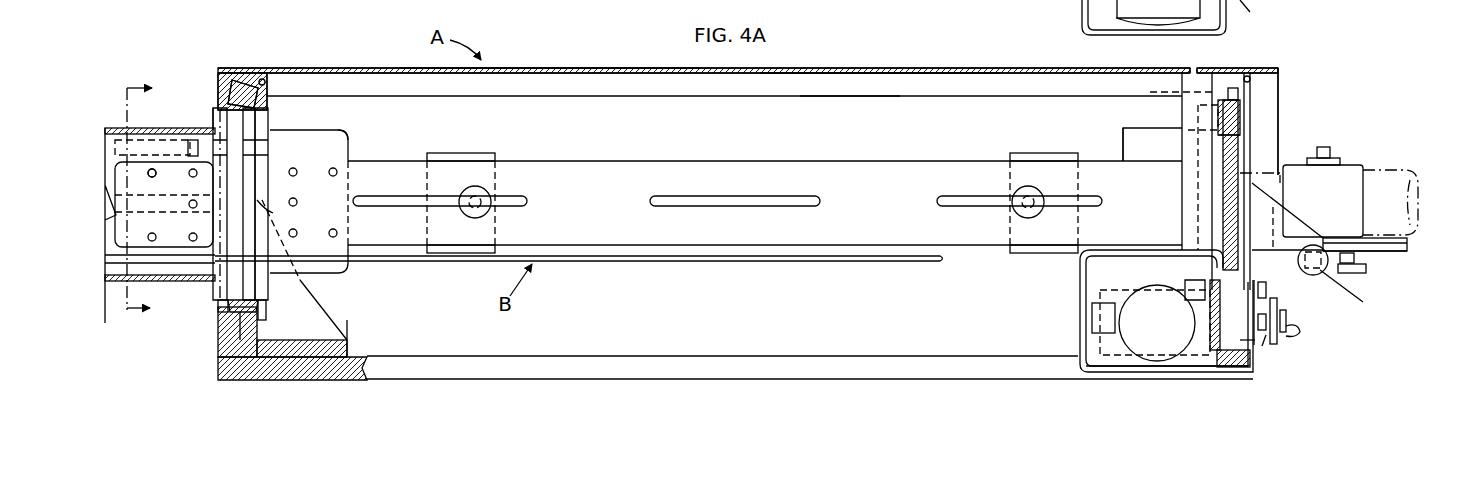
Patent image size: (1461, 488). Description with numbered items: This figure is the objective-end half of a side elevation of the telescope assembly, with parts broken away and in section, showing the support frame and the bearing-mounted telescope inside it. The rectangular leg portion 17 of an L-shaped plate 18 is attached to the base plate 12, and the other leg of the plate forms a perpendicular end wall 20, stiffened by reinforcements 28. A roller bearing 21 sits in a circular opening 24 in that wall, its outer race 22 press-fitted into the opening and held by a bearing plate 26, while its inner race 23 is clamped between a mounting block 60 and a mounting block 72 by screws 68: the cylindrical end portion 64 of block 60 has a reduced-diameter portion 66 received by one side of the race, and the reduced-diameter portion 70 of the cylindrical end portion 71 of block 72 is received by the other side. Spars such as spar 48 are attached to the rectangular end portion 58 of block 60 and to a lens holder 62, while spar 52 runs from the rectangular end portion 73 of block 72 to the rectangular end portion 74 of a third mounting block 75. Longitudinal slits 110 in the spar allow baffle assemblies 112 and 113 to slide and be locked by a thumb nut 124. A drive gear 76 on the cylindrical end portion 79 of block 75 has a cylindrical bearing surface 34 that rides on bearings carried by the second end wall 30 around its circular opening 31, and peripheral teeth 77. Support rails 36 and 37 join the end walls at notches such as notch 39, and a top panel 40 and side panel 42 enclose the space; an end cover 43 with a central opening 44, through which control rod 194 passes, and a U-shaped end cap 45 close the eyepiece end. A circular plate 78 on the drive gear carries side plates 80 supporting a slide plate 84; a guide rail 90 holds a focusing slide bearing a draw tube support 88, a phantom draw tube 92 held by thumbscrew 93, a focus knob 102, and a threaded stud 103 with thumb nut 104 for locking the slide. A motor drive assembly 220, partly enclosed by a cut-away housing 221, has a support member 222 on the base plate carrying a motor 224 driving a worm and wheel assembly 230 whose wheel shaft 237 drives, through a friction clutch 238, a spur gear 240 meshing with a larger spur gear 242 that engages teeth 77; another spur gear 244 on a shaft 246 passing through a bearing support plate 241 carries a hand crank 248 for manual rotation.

The base plate 12 is at (742, 359).
The rectangular leg portion 17 is at (340, 343).
The L-shaped plate 18 is at (216, 362).
The end wall 20 is at (245, 75).
The roller bearing 21 is at (222, 311).
The outer race 22 is at (222, 326).
The inner race 23 is at (260, 303).
The circular opening 24 is at (252, 365).
The bearing plate 26 is at (270, 86).
The reinforcements 28 is at (325, 303).
The end wall 30 is at (1200, 108).
The circular opening 31 is at (1168, 80).
The cylindrical bearing surface 34 is at (1220, 150).
The support rail 36 is at (586, 80).
The support rail 37 is at (345, 72).
The notch 39 is at (1203, 97).
The top panel 40 is at (828, 74).
The side panel 42 is at (846, 138).
The end cover 43 is at (1255, 108).
The central opening 44 is at (1250, 124).
The end cap 45 is at (1262, 72).
The spar 48 is at (187, 235).
The spar 52 is at (570, 221).
The rectangular end portion 58 is at (148, 270).
The mounting block 60 is at (206, 111).
The lens holder 62 is at (191, 204).
The cylindrical end portion 64 is at (218, 107).
The reduced-diameter portion 66 is at (236, 95).
The screws 68 is at (196, 128).
The reduced-diameter portion 70 is at (249, 126).
The cylindrical end portion 71 is at (263, 112).
The mounting block 72 is at (332, 130).
The rectangular end portion 73 is at (350, 149).
The rectangular end portion 74 is at (1124, 145).
The mounting block 75 is at (1122, 130).
The drive gear 76 is at (1213, 176).
The peripheral teeth 77 is at (1251, 105).
The circular plate 78 is at (1249, 157).
The cylindrical end portion 79 is at (1220, 110).
The side plate 80 is at (1302, 245).
The slide plate 84 is at (1396, 252).
The draw tube support 88 is at (1335, 208).
The guide rail 90 is at (1408, 244).
The draw tube 92 is at (1395, 172).
The thumbscrew 93 is at (1341, 152).
The knob 102 is at (1328, 268).
The threaded stud 103 is at (1366, 269).
The thumb nut 104 is at (1342, 253).
The longitudinal slit 110 is at (505, 200).
The baffle assembly 112 is at (1053, 150).
The baffle assembly 113 is at (478, 150).
The thumb nut 124 is at (1030, 218).
The control rod 194 is at (692, 262).
The motor drive assembly 220 is at (1315, 364).
The housing 221 is at (1082, 18).
The support member 222 is at (1236, 362).
The motor 224 is at (1150, 352).
The worm and wheel assembly 230 is at (1081, 266).
The wheel shaft 237 is at (1176, 380).
The friction clutch 238 is at (1243, 5).
The spur gear 240 is at (1252, 277).
The bearing support plate 241 is at (1270, 340).
The spur gear 242 is at (1290, 318).
The spur gear 244 is at (1250, 332).
The rotatable shaft 246 is at (1287, 332).
The hand crank 248 is at (1280, 300).